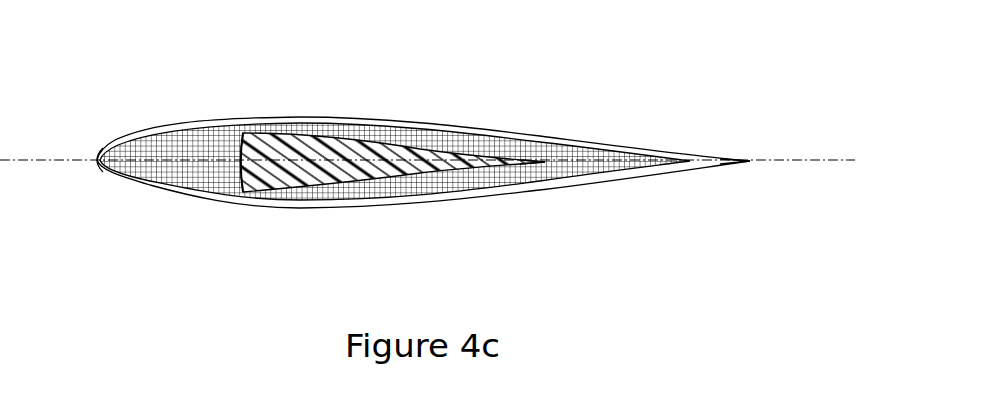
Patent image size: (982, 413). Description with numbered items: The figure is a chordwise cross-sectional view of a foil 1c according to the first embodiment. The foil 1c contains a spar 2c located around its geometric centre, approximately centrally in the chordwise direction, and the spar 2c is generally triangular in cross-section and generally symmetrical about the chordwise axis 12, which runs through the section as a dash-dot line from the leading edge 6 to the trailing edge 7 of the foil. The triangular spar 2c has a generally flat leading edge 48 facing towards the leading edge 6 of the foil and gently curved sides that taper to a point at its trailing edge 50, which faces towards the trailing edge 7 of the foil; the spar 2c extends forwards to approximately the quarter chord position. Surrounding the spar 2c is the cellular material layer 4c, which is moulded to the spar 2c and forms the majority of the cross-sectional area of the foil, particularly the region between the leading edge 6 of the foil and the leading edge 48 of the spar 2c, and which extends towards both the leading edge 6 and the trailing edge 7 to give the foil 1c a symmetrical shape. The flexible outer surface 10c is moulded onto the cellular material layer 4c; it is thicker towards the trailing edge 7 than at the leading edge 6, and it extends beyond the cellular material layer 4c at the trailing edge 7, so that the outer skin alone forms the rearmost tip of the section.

The foil 1c is at (427, 161).
The spar 2c is at (337, 138).
The cellular material layer 4c is at (148, 171).
The leading edge 6 is at (97, 166).
The trailing edge 7 is at (752, 162).
The flexible outer surface 10c is at (583, 144).
The chordwise axis 12 is at (793, 158).
The leading edge of the spar 48 is at (240, 136).
The trailing edge of the spar 50 is at (538, 162).